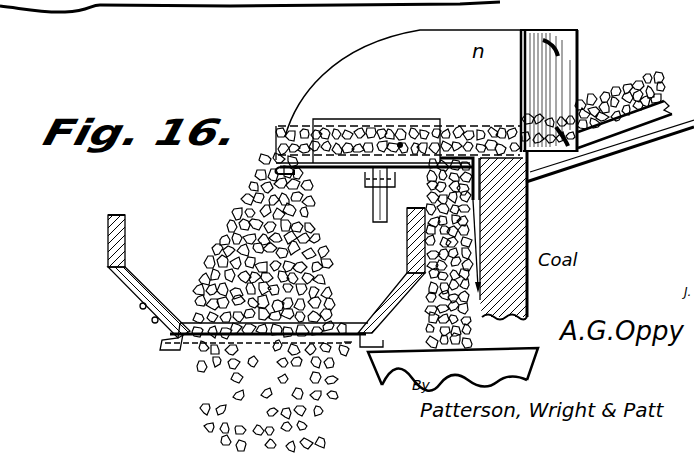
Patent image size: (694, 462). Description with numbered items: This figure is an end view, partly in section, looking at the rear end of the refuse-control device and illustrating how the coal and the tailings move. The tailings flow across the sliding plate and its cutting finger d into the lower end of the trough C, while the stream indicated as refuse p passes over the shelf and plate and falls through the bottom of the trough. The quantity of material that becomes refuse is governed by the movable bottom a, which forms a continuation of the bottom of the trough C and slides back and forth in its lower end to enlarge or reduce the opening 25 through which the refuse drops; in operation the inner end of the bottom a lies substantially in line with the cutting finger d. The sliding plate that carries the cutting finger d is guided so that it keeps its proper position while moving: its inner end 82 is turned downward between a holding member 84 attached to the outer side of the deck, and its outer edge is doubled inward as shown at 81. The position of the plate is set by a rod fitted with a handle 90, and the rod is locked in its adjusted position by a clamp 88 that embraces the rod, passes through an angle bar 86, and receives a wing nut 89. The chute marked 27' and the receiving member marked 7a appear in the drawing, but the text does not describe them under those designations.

The discharge chute 27' is at (580, 77).
The angle bar 86 is at (345, 119).
The wing nut 89 is at (402, 145).
The doubled inward outer edge of plate 81 is at (286, 178).
The clamp 88 is at (394, 189).
The handle 90 is at (380, 222).
The turned down inner end of plate 82 is at (475, 182).
The holding member 84 is at (477, 217).
The opening of the trough 25 is at (335, 327).
The receptacle 7a is at (453, 369).
The cutting finger d is at (278, 135).
The movable bottom a is at (348, 340).
The trough C is at (136, 288).
The refuse p is at (221, 226).